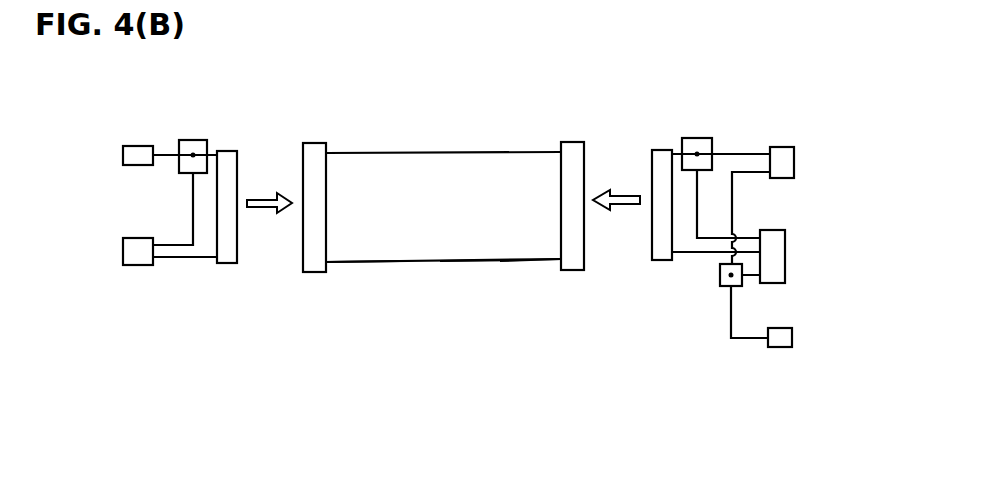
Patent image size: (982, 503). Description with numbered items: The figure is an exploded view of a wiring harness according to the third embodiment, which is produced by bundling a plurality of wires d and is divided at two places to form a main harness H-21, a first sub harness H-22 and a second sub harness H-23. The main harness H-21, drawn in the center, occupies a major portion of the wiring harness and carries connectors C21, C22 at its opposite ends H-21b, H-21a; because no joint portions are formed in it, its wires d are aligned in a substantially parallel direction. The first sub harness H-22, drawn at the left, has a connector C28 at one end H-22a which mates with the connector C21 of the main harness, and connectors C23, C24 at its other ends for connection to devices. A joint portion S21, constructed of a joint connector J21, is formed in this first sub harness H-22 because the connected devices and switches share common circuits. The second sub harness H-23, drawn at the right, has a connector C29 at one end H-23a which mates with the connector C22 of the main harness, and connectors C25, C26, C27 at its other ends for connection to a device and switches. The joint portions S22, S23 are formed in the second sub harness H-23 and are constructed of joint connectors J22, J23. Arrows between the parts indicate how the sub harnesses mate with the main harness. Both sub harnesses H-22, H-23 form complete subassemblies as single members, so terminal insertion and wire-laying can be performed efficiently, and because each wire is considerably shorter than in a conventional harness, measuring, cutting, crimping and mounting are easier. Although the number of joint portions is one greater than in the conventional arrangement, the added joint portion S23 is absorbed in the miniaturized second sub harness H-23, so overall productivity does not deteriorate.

The connector C21 is at (313, 267).
The connector C22 is at (573, 267).
The main harness H-21 is at (437, 286).
The end of main harness H-21a is at (540, 267).
The end of main harness H-21b is at (340, 267).
The wire d is at (480, 267).
The connector C23 is at (137, 166).
The connector C24 is at (135, 266).
The joint connector J21 is at (200, 140).
The joint portion S21 is at (190, 162).
The connector C28 is at (235, 243).
The first sub harness H-22 is at (169, 279).
The end of first sub harness H-22a is at (207, 265).
The connector C29 is at (657, 247).
The joint connector J22 is at (703, 138).
The joint portion S22 is at (700, 157).
The connector C26 is at (783, 158).
The connector C25 is at (770, 257).
The joint connector J23 is at (728, 287).
The joint portion S23 is at (740, 285).
The connector C27 is at (792, 345).
The second sub harness H-23 is at (695, 343).
The end of second sub harness H-23a is at (690, 253).